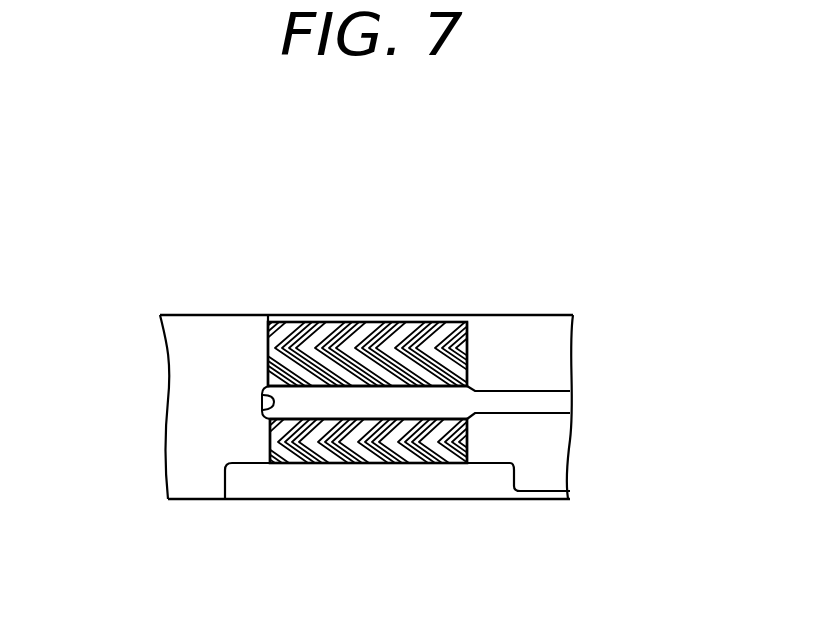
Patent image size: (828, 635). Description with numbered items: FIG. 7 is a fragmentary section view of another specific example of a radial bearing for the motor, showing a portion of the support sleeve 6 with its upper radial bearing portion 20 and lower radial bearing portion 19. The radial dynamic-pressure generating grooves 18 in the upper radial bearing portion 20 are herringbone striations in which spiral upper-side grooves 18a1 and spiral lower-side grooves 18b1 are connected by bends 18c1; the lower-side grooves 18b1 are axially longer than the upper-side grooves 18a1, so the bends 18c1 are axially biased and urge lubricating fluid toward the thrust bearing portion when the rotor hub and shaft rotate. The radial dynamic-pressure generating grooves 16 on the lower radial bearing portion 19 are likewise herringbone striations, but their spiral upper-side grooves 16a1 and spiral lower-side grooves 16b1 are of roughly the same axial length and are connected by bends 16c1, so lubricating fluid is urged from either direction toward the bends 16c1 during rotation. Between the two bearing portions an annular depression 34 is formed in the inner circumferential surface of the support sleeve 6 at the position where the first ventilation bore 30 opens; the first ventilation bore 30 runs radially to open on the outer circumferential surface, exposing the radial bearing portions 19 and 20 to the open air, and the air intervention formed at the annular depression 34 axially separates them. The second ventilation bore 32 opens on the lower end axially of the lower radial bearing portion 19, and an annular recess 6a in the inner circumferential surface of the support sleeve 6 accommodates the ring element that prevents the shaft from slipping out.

The support sleeve 6 is at (198, 330).
The annular recess 6a is at (233, 500).
The radial dynamic-pressure generating grooves 18 is at (390, 273).
The spiral upper-side grooves 18a1 is at (387, 358).
The spiral lower-side grooves 18b1 is at (393, 354).
The bends 18c1 is at (313, 354).
The radial dynamic-pressure generating grooves 16 is at (376, 523).
The spiral upper-side grooves 16a1 is at (391, 441).
The spiral lower-side grooves 16b1 is at (383, 441).
The bends 16c1 is at (303, 441).
The annular depression 34 is at (263, 398).
The upper radial bearing portion 20 is at (469, 345).
The first ventilation bore 30 is at (540, 397).
The lower radial bearing portion 19 is at (469, 442).
The second ventilation bore 32 is at (540, 497).